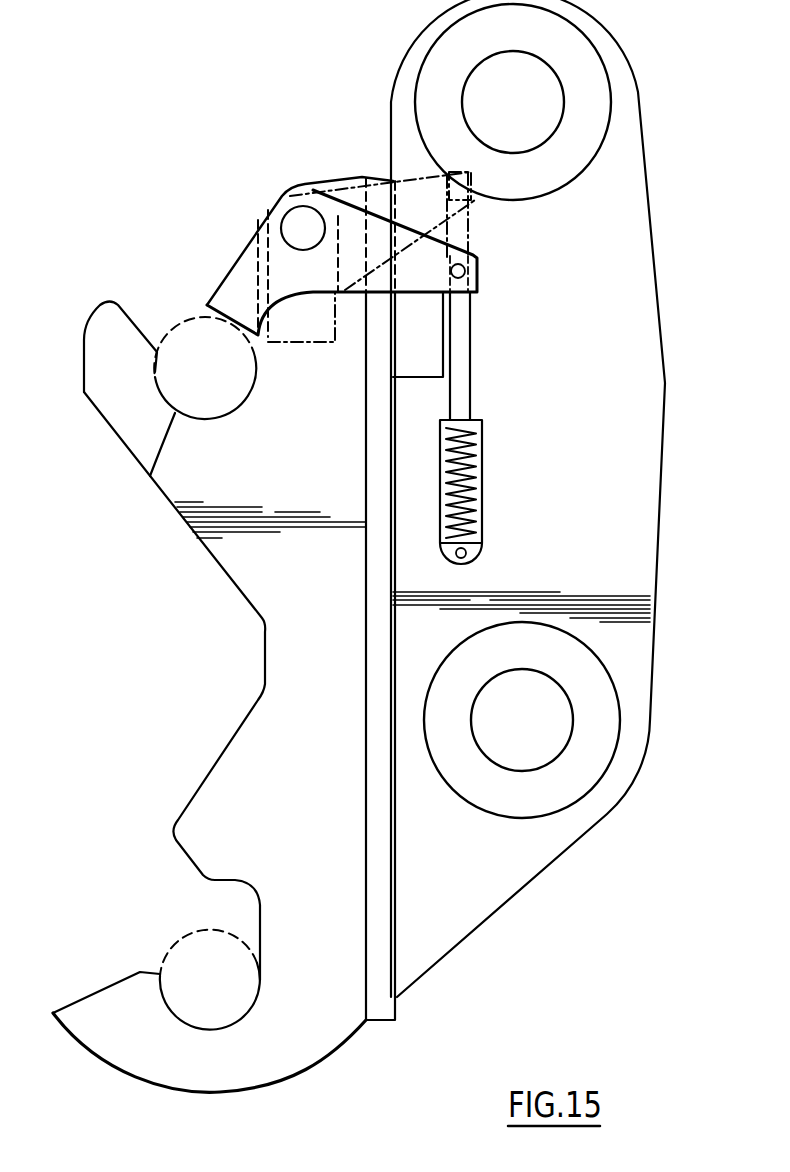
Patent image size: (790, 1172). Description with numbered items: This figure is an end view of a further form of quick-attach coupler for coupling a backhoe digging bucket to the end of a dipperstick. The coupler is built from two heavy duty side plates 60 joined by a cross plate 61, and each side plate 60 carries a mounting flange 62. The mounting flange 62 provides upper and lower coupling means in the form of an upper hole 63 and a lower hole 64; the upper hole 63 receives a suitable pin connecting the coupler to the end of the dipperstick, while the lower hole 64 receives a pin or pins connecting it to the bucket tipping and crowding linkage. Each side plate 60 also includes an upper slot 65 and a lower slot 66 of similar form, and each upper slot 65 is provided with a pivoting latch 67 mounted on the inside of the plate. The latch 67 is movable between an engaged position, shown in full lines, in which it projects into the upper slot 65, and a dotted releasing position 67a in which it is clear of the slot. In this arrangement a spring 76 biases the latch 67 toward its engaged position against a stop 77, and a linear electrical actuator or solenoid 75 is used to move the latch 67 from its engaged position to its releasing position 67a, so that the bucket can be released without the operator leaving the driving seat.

The side plate 60 is at (242, 540).
The cross plate 61 is at (392, 932).
The mounting flange 62 is at (620, 582).
The upper hole 63 is at (476, 78).
The lower hole 64 is at (532, 762).
The upper slot 65 is at (153, 478).
The lower slot 66 is at (183, 1022).
The latch 67 is at (237, 286).
The releasing position 67a is at (413, 176).
The linear electrical actuator 75 is at (473, 537).
The spring 76 is at (478, 463).
The stop 77 is at (428, 347).